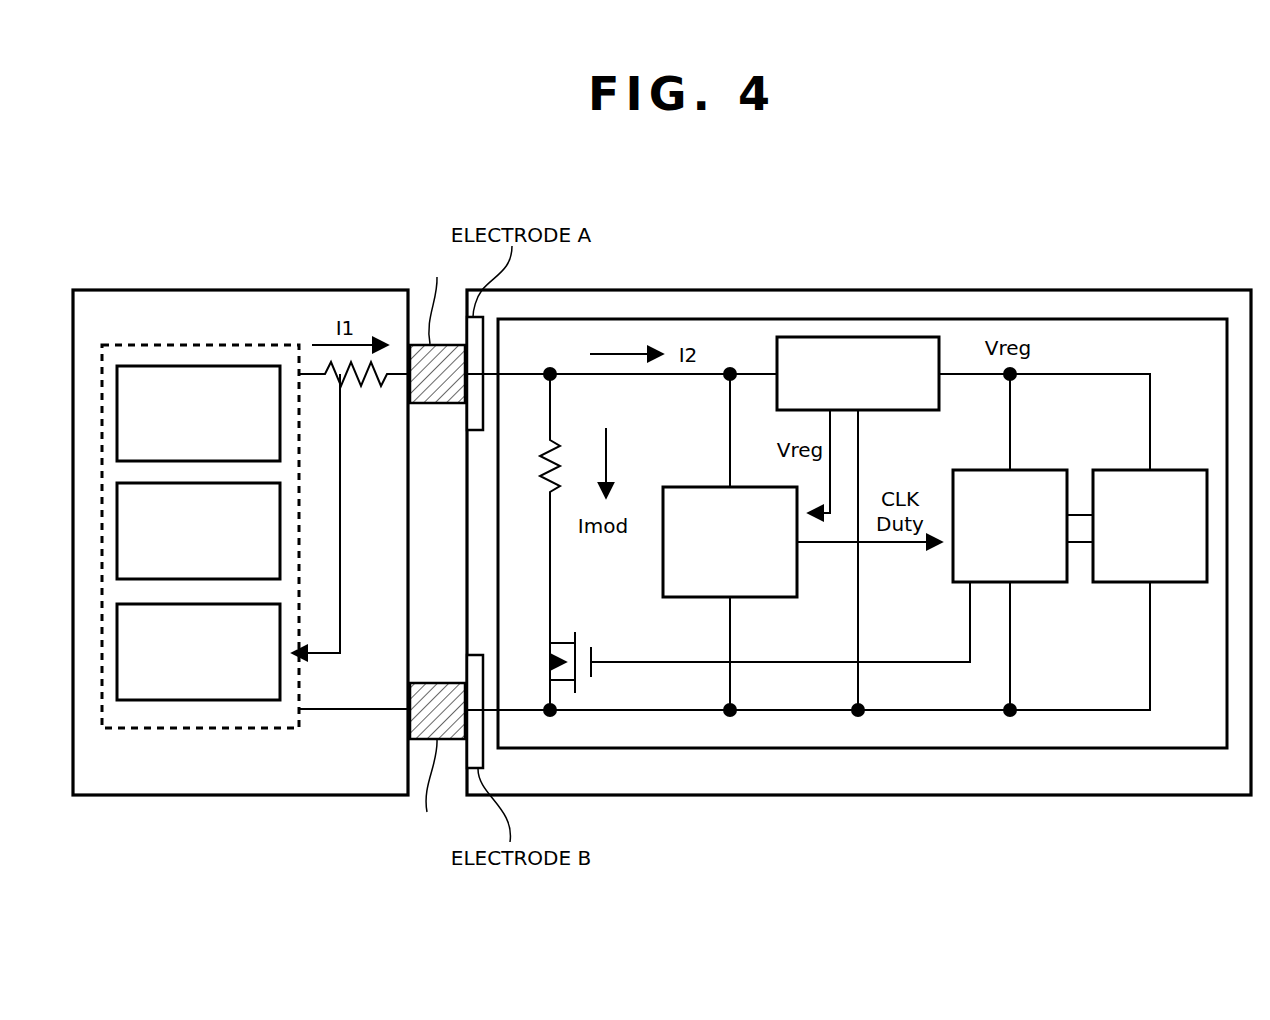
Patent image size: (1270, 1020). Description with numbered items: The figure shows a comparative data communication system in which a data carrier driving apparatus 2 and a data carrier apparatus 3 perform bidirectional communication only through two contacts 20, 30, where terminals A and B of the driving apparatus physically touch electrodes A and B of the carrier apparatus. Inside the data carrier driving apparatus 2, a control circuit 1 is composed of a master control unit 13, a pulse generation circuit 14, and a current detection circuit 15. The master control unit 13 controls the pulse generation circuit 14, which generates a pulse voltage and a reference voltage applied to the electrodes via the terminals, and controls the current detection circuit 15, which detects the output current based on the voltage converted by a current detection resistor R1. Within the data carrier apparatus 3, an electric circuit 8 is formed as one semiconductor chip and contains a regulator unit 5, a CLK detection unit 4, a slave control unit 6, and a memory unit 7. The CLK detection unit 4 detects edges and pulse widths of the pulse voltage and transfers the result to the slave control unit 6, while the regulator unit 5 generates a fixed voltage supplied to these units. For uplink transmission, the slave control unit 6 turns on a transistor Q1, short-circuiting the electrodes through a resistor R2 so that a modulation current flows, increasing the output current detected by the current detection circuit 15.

The control circuit 1 is at (157, 345).
The data carrier driving apparatus 2 is at (195, 290).
The data carrier apparatus 3 is at (1067, 290).
The CLK detection unit 4 is at (767, 598).
The regulator unit 5 is at (889, 337).
The slave control unit 6 is at (1042, 583).
The memory unit 7 is at (1175, 583).
The electric circuit 8 is at (690, 318).
The master control unit 13 is at (117, 415).
The pulse generation circuit 14 is at (117, 530).
The current detection circuit 15 is at (117, 647).
The contact 20 is at (468, 404).
The contact 30 is at (468, 682).
The current detection resistor R1 is at (367, 392).
The resistor R2 is at (545, 497).
The transistor Q1 is at (597, 656).